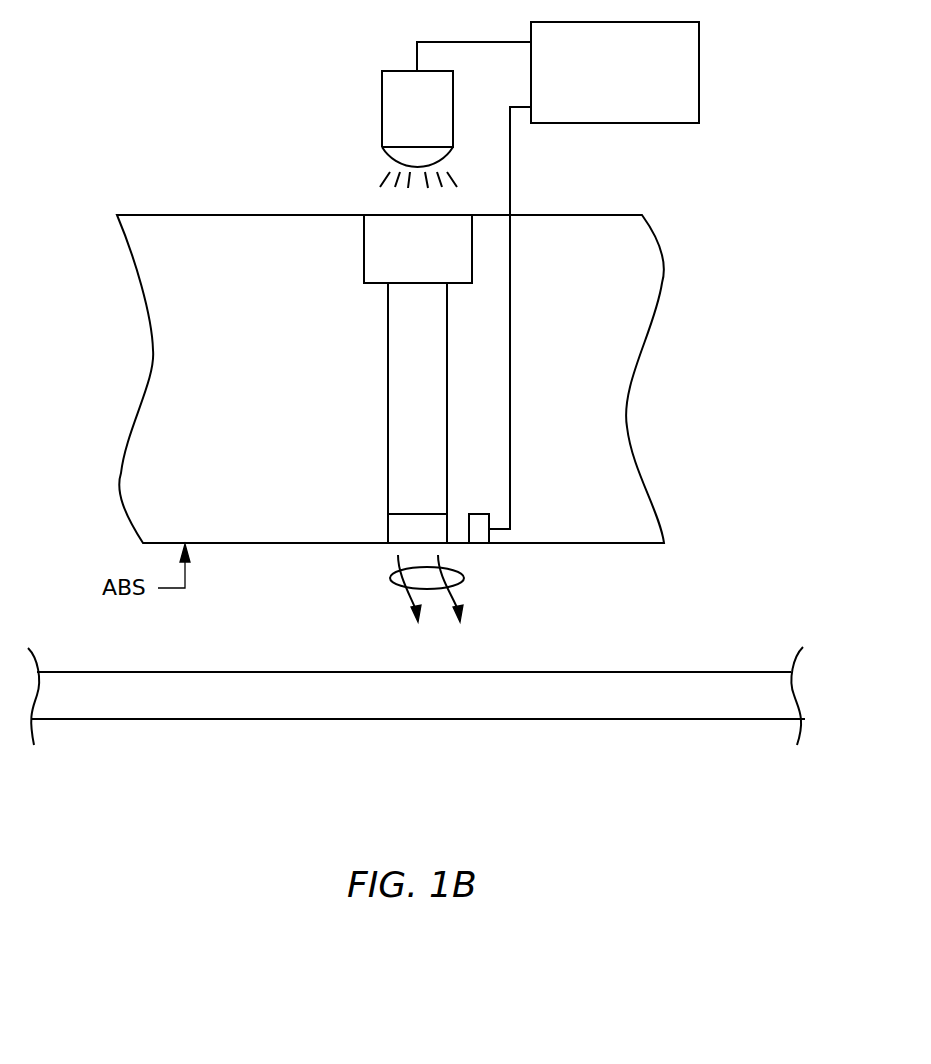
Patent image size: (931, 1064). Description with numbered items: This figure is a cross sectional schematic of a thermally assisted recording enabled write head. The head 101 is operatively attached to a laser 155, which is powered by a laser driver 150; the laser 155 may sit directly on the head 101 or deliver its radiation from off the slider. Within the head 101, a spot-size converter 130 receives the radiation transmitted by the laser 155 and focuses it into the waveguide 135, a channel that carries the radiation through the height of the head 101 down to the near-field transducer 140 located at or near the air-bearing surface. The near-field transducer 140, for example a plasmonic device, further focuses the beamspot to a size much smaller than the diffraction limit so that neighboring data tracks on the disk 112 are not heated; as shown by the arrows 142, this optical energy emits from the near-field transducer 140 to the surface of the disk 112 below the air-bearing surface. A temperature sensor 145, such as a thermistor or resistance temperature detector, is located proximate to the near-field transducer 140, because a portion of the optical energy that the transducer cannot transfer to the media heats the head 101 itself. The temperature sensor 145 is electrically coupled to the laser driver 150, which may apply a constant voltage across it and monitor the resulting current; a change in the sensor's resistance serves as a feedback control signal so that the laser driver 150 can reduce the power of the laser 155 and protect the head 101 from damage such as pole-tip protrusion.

The head 101 is at (186, 178).
The disk 112 is at (197, 720).
The spot-size converter 130 is at (364, 240).
The waveguide 135 is at (388, 358).
The near-field transducer 140 is at (388, 528).
The arrows 142 is at (393, 578).
The temperature sensor 145 is at (482, 543).
The laser driver 150 is at (699, 75).
The laser 155 is at (382, 102).